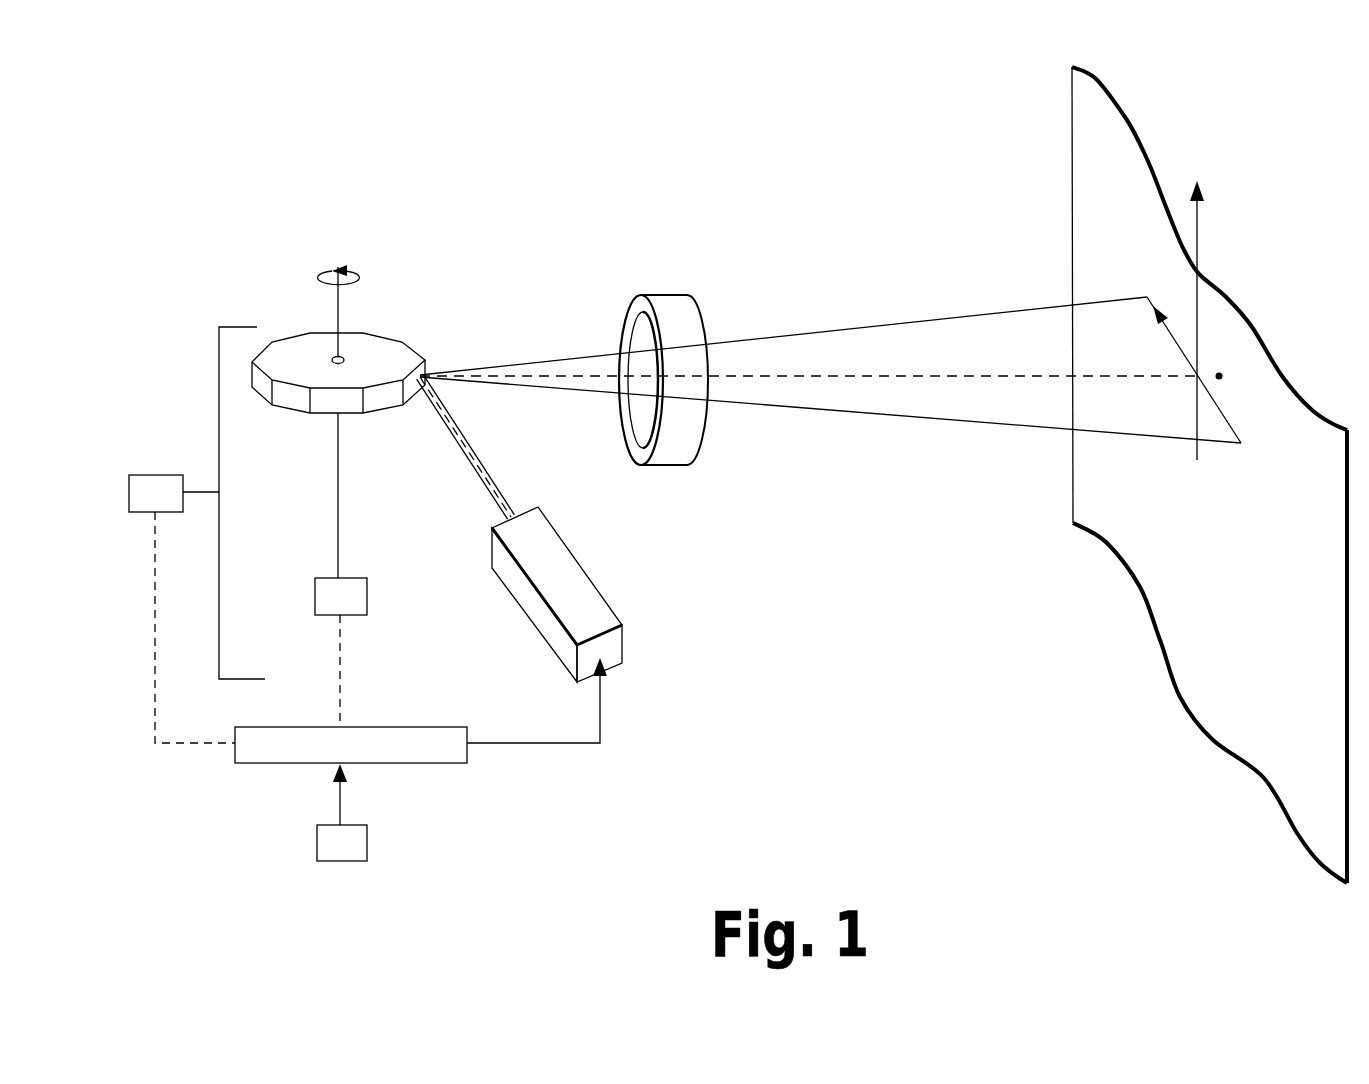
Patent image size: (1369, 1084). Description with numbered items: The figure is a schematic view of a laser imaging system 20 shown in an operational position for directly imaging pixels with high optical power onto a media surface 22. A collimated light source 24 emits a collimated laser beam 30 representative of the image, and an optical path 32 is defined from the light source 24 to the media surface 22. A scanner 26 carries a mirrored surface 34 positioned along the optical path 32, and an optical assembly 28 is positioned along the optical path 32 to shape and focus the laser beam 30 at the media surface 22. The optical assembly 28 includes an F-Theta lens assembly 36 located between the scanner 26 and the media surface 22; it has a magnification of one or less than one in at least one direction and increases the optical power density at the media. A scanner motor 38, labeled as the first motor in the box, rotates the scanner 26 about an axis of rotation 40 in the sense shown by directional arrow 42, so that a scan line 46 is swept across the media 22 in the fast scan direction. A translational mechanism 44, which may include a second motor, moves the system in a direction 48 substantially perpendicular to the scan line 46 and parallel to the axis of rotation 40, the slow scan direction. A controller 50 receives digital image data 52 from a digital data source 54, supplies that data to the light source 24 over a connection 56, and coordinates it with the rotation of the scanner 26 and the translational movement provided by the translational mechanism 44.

The laser imaging system 20 is at (285, 220).
The media surface 22 is at (1182, 600).
The collimated light source 24 is at (600, 563).
The scanner 26 is at (268, 318).
The optical assembly 28 is at (617, 283).
The collimated laser beam 30 is at (503, 494).
The optical path 32 is at (468, 448).
The mirrored surface 34 is at (426, 371).
The F-Theta lens assembly 36 is at (677, 285).
The scanner motor 38 is at (367, 596).
The axis of rotation 40 is at (343, 313).
The directional arrow 42 is at (359, 281).
The translational mechanism 44 is at (129, 492).
The scan line 46 is at (1230, 425).
The direction 48 is at (1198, 246).
The controller 50 is at (447, 765).
The digital image data 52 is at (340, 806).
The digital data source 54 is at (367, 842).
The control line to laser 56 is at (601, 712).